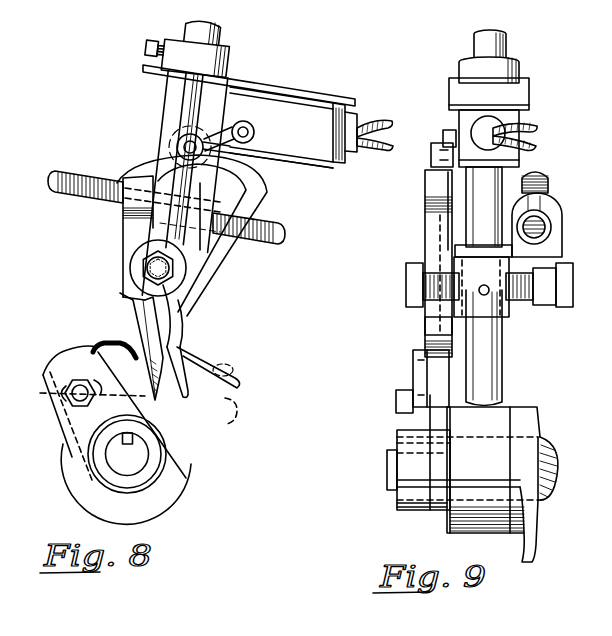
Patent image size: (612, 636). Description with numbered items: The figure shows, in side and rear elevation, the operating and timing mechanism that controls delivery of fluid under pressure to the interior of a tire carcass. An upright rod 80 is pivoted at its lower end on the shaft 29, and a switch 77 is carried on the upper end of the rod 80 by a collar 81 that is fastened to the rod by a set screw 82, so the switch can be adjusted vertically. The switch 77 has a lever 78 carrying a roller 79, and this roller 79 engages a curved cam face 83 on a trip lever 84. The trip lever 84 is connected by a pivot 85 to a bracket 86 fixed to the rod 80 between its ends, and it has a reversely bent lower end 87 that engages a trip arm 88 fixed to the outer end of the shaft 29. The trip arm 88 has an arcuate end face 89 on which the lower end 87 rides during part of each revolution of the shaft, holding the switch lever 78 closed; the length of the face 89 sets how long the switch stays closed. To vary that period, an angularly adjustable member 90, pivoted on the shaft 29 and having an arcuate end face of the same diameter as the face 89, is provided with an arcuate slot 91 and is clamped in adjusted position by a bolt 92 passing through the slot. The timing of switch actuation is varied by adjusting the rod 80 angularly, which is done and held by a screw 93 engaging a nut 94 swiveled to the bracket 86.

In FIG. 8, the shaft 29 is at (138, 462).
In FIG. 9, the shaft 29 is at (540, 438).
In FIG. 8, the switch 77 is at (308, 104).
In FIG. 9, the switch 77 is at (530, 93).
In FIG. 8, the lever 78 is at (237, 128).
In FIG. 9, the lever 78 is at (443, 135).
In FIG. 8, the roller 79 is at (178, 152).
In FIG. 9, the roller 79 is at (433, 152).
In FIG. 8, the upright rod 80 is at (140, 307).
In FIG. 9, the upright rod 80 is at (493, 371).
In FIG. 8, the collar 81 is at (232, 57).
In FIG. 9, the collar 81 is at (520, 70).
In FIG. 8, the set screw 82 is at (151, 44).
In FIG. 8, the curved cam face 83 is at (255, 174).
In FIG. 8, the trip lever 84 is at (217, 257).
In FIG. 9, the trip lever 84 is at (424, 243).
In FIG. 8, the pivot 85 is at (140, 262).
In FIG. 9, the pivot 85 is at (406, 283).
In FIG. 8, the bracket 86 is at (127, 288).
In FIG. 9, the bracket 86 is at (506, 322).
In FIG. 8, the reversely bent lower end 87 is at (238, 388).
In FIG. 8, the trip arm 88 is at (95, 348).
In FIG. 8, the arcuate end face 89 is at (108, 342).
In FIG. 9, the arcuate end face 89 is at (424, 334).
In FIG. 8, the angularly adjustable member 90 is at (53, 405).
In FIG. 9, the angularly adjustable member 90 is at (413, 380).
In FIG. 8, the arcuate slot 91 is at (93, 376).
In FIG. 8, the bolt 92 is at (65, 391).
In FIG. 9, the bolt 92 is at (396, 407).
In FIG. 8, the screw 93 is at (78, 172).
In FIG. 9, the screw 93 is at (548, 182).
In FIG. 8, the nut 94 is at (257, 201).
In FIG. 9, the nut 94 is at (562, 255).